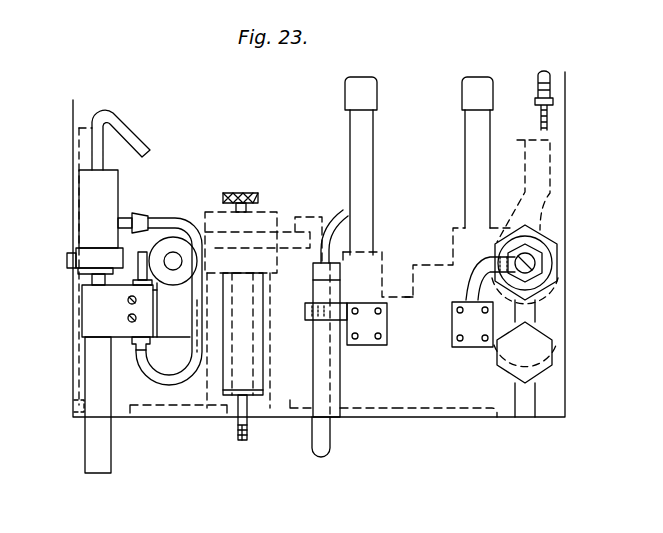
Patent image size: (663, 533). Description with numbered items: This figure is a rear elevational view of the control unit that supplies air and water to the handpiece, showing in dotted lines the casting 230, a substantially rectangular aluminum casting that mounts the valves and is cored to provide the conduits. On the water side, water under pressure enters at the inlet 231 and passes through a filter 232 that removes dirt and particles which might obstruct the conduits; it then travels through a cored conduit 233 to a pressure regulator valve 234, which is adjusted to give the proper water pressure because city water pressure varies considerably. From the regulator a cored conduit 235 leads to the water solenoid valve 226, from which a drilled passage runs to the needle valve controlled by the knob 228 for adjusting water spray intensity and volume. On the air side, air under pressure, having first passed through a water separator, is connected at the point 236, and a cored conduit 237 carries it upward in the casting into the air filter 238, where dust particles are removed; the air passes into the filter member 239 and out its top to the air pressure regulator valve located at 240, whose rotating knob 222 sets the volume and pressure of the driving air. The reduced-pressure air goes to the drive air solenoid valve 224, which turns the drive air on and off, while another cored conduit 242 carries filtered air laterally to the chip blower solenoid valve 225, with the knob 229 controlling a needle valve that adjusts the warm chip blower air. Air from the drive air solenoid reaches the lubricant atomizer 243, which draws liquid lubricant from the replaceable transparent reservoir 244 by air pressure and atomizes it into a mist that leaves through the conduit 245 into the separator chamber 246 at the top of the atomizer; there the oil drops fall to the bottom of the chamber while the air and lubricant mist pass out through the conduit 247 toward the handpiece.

The rotating knob 222 is at (168, 258).
The drive air solenoid valve 224 is at (180, 378).
The chip blower solenoid valve 225 is at (345, 331).
The water solenoid valve 226 is at (472, 342).
The knob 228 is at (478, 95).
The knob 229 is at (370, 95).
The casting 230 is at (400, 296).
The water inlet 231 is at (538, 401).
The water filter 232 is at (535, 347).
The cored conduit 233 is at (539, 306).
The pressure regulator valve 234 is at (540, 243).
The cored conduit 235 is at (472, 291).
The air supply connection point 236 is at (324, 446).
The cored conduit 237 is at (327, 370).
The air filter 238 is at (263, 320).
The filter member 239 is at (227, 296).
The air pressure regulator valve 240 is at (172, 270).
The cored conduit 242 is at (270, 350).
The lubricant atomizer 243 is at (100, 307).
The transparent reservoir 244 is at (102, 369).
The conduit 245 is at (150, 378).
The separator chamber 246 is at (121, 192).
The conduit 247 is at (139, 132).